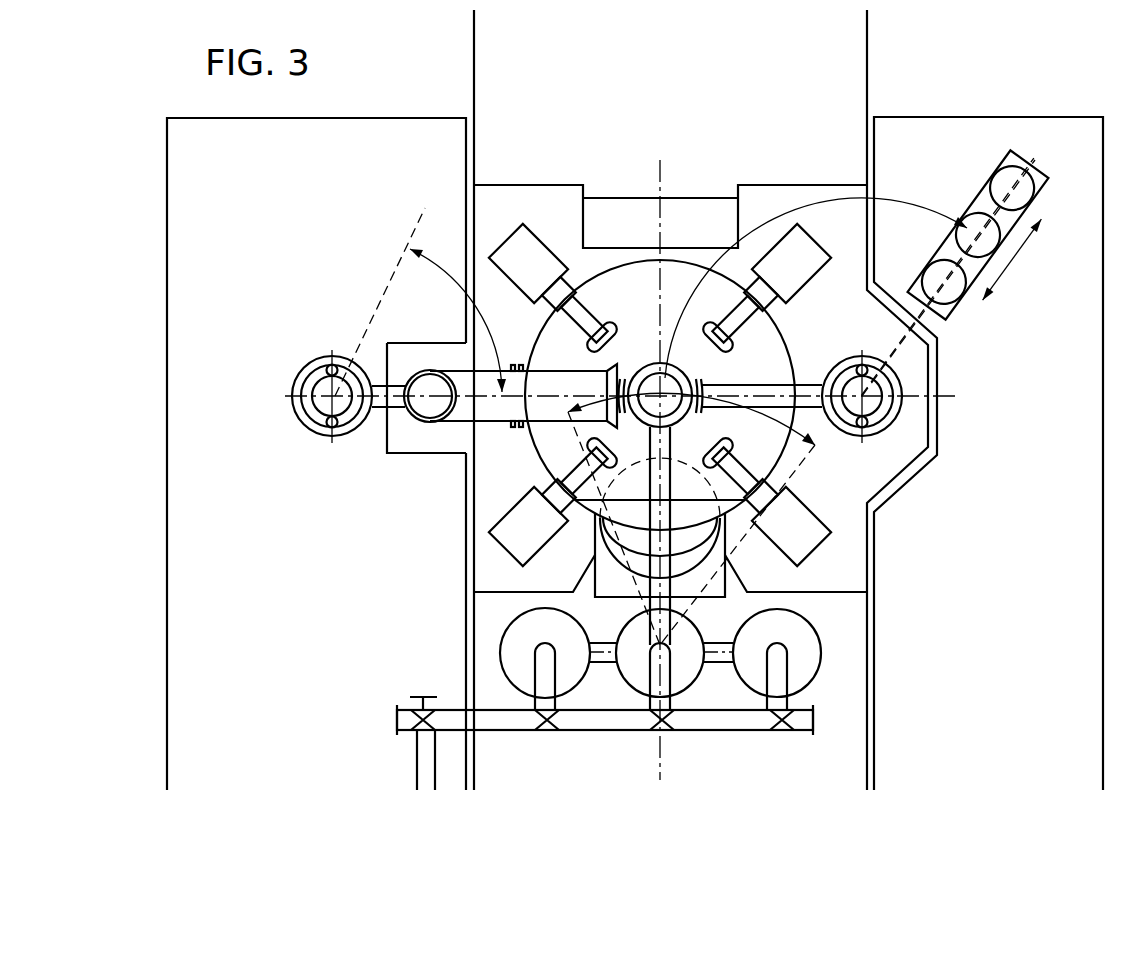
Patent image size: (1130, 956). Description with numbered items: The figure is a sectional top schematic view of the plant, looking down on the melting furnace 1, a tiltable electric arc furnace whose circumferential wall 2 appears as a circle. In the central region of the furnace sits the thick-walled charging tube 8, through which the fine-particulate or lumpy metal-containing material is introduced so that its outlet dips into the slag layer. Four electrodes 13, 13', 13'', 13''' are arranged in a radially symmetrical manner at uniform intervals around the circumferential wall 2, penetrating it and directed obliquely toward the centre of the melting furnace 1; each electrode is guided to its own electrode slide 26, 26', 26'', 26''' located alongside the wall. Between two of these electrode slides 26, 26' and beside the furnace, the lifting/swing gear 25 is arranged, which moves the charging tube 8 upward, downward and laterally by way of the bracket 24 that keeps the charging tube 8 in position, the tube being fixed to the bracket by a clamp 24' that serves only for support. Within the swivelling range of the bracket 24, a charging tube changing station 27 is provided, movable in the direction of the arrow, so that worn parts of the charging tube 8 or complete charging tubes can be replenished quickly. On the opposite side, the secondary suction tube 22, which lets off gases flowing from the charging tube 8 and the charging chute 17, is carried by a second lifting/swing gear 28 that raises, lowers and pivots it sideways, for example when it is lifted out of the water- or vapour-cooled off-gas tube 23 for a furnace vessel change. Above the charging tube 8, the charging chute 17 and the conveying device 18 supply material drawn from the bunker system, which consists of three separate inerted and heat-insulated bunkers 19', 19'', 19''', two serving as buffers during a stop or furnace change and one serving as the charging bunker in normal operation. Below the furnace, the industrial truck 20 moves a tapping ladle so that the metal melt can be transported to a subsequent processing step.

The melting furnace 1 is at (785, 462).
The circumferential wall 2 is at (788, 347).
The charging tube 8 is at (648, 362).
The electrode 13 is at (741, 330).
The electrode 13' is at (781, 472).
The electrode 13'' is at (517, 476).
The electrode 13''' is at (598, 319).
The charging chute 17 is at (670, 418).
The conveying device 18 is at (660, 592).
The bunker 19' is at (844, 659).
The bunker 19'' is at (682, 689).
The bunker 19''' is at (493, 659).
The industrial truck 20 is at (693, 555).
The secondary suction tube 22 is at (502, 412).
The off-gas tube 23 is at (427, 370).
The bracket 24 is at (850, 306).
The clamp 24' is at (677, 278).
The lifting/swing gear 25 is at (897, 380).
The electrode slide 26 is at (799, 266).
The electrode slide 26' is at (799, 530).
The electrode slide 26'' is at (497, 536).
The electrode slide 26''' is at (543, 231).
The charging tube changing station 27 is at (975, 200).
The lifting/swing gear 28 is at (298, 377).